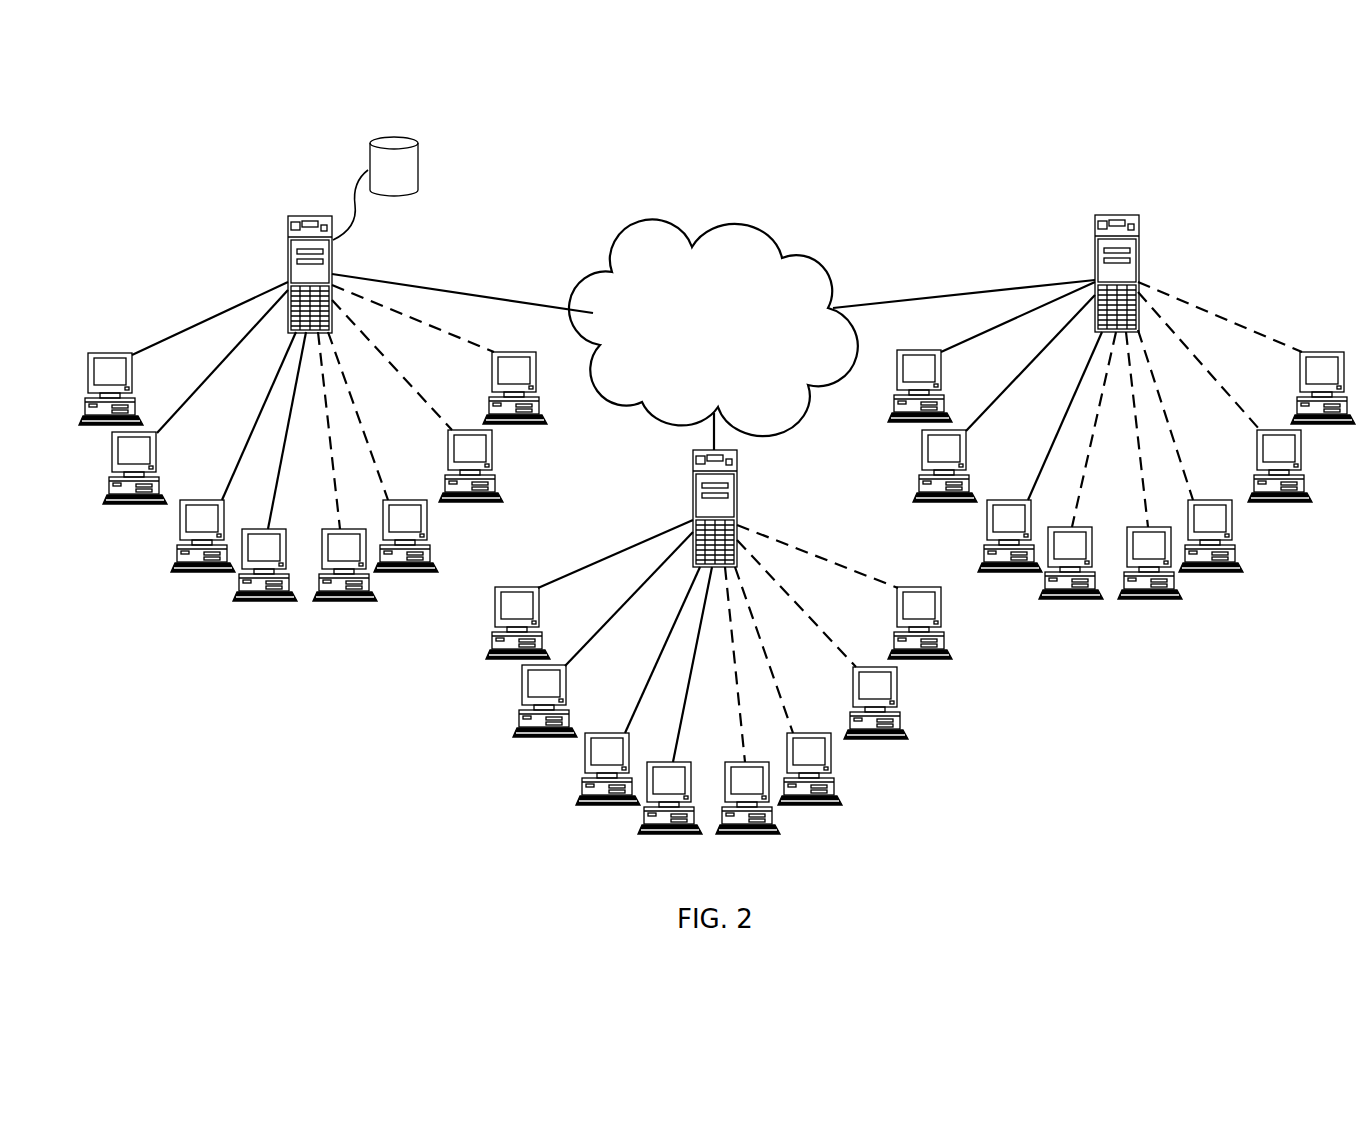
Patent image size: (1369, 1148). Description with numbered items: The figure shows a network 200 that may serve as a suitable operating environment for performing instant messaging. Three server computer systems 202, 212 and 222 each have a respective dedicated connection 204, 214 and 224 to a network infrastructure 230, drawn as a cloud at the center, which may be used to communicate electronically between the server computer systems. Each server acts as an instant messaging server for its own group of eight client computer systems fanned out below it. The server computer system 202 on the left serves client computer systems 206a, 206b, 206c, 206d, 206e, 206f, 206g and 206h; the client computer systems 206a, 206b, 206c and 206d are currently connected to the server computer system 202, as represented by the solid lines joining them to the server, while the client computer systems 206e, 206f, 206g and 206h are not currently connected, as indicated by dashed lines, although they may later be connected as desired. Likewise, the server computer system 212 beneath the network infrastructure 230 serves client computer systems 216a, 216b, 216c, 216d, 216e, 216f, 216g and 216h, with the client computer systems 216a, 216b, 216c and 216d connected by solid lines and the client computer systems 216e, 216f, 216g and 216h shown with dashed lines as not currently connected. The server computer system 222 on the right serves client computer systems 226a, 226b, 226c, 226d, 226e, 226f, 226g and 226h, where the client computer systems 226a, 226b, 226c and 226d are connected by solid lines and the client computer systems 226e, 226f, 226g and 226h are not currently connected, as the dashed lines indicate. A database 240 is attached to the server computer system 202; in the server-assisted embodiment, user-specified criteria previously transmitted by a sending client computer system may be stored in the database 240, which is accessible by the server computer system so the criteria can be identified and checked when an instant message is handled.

The network 200 is at (1062, 190).
The server computer system 202 is at (288, 225).
The dedicated connection 204 is at (432, 291).
The client computer system 206a is at (108, 426).
The client computer system 206b is at (124, 504).
The client computer system 206c is at (181, 572).
The client computer system 206d is at (246, 601).
The client computer system 206e is at (319, 601).
The client computer system 206f is at (389, 572).
The client computer system 206g is at (456, 502).
The client computer system 206h is at (496, 424).
The server computer system 212 is at (737, 474).
The dedicated connection 214 is at (712, 425).
The client computer system 216a is at (515, 660).
The client computer system 216b is at (531, 737).
The client computer system 216c is at (587, 805).
The client computer system 216d is at (651, 834).
The client computer system 216e is at (726, 834).
The client computer system 216f is at (796, 805).
The client computer system 216g is at (861, 739).
The client computer system 216h is at (903, 659).
The server computer system 222 is at (1138, 247).
The dedicated connection 224 is at (922, 290).
The client computer system 226a is at (918, 424).
The client computer system 226b is at (936, 502).
The client computer system 226c is at (991, 572).
The client computer system 226d is at (1053, 599).
The client computer system 226e is at (1128, 599).
The client computer system 226f is at (1196, 572).
The client computer system 226g is at (1264, 502).
The client computer system 226h is at (1304, 424).
The network infrastructure 230 is at (701, 364).
The database 240 is at (418, 166).